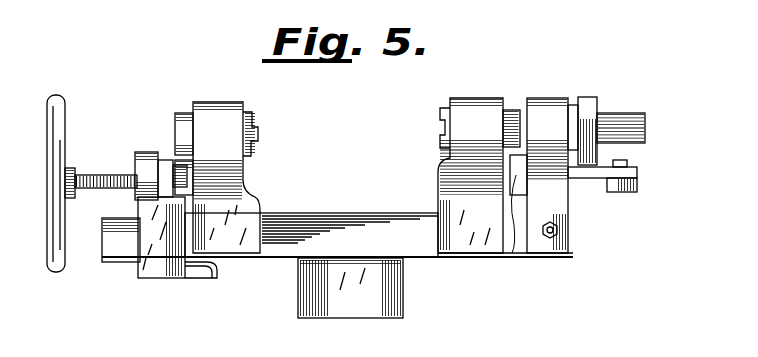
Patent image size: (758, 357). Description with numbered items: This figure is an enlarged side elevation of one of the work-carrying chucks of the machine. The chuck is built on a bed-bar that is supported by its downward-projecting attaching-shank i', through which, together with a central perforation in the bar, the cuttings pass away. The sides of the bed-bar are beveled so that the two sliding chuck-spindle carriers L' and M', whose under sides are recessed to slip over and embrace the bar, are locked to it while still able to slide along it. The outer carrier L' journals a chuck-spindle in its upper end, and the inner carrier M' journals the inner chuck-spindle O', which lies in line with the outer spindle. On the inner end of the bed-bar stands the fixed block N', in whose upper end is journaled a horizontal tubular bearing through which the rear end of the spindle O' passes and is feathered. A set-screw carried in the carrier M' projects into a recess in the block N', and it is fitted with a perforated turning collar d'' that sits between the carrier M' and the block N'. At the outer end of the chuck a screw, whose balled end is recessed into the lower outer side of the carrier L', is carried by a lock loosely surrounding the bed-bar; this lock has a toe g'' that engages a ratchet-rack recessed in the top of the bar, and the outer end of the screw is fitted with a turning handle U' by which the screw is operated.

The turning handle U' is at (69, 183).
The feed screw S'' is at (106, 165).
The toe g'' is at (142, 185).
The outer chuck-spindle carrier L' is at (217, 164).
The chuck K' is at (266, 131).
The inner chuck-spindle carrier M' is at (482, 161).
The fixed block N' is at (582, 161).
The inner chuck-spindle O' is at (621, 116).
The perforated turning collar d'' is at (337, 250).
The attaching-shank i' is at (363, 288).